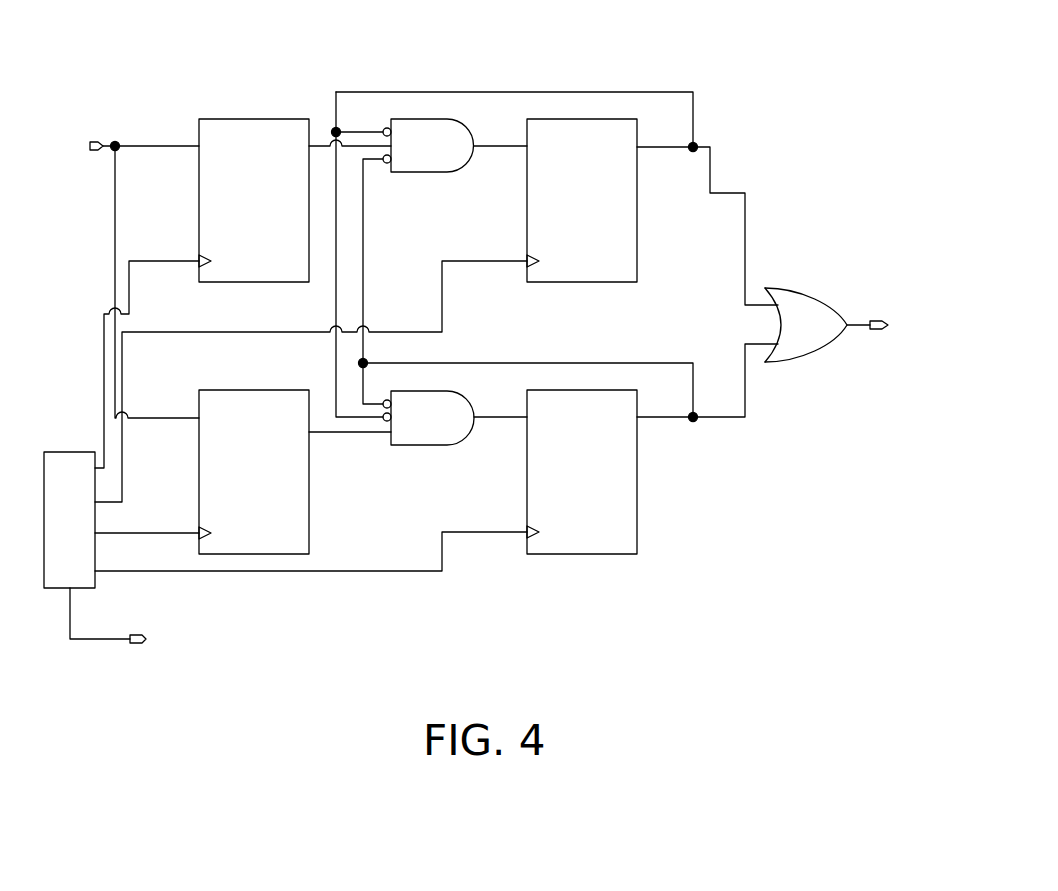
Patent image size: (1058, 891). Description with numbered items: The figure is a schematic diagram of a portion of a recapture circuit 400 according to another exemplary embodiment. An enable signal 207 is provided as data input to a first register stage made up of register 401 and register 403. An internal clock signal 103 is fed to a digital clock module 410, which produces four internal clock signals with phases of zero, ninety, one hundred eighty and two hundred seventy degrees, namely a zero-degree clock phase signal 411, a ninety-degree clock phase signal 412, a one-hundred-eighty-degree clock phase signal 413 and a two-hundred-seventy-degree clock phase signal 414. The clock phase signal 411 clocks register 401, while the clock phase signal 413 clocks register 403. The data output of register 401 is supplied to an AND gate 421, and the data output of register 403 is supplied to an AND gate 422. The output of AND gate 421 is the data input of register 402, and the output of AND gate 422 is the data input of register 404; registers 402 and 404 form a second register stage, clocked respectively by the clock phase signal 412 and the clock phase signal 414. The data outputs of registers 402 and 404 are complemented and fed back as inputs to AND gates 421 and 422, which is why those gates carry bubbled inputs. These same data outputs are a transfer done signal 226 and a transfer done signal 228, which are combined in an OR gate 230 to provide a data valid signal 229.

The recapture circuit 400 is at (762, 72).
The enable signal 207 is at (61, 156).
The register 401 is at (240, 218).
The register 402 is at (568, 218).
The register 403 is at (240, 490).
The register 404 is at (568, 490).
The AND gate 421 is at (416, 155).
The AND gate 422 is at (416, 426).
The transfer done signal 226 is at (735, 193).
The transfer done signal 228 is at (745, 397).
The OR gate 230 is at (805, 333).
The data valid signal 229 is at (902, 352).
The digital clock module 410 is at (69, 520).
The internal clock signal 103 is at (173, 668).
The clock phase 0 signal 411 is at (182, 261).
The clock phase 90 signal 412 is at (504, 261).
The clock phase 180 signal 413 is at (181, 533).
The clock phase 270 signal 414 is at (504, 532).